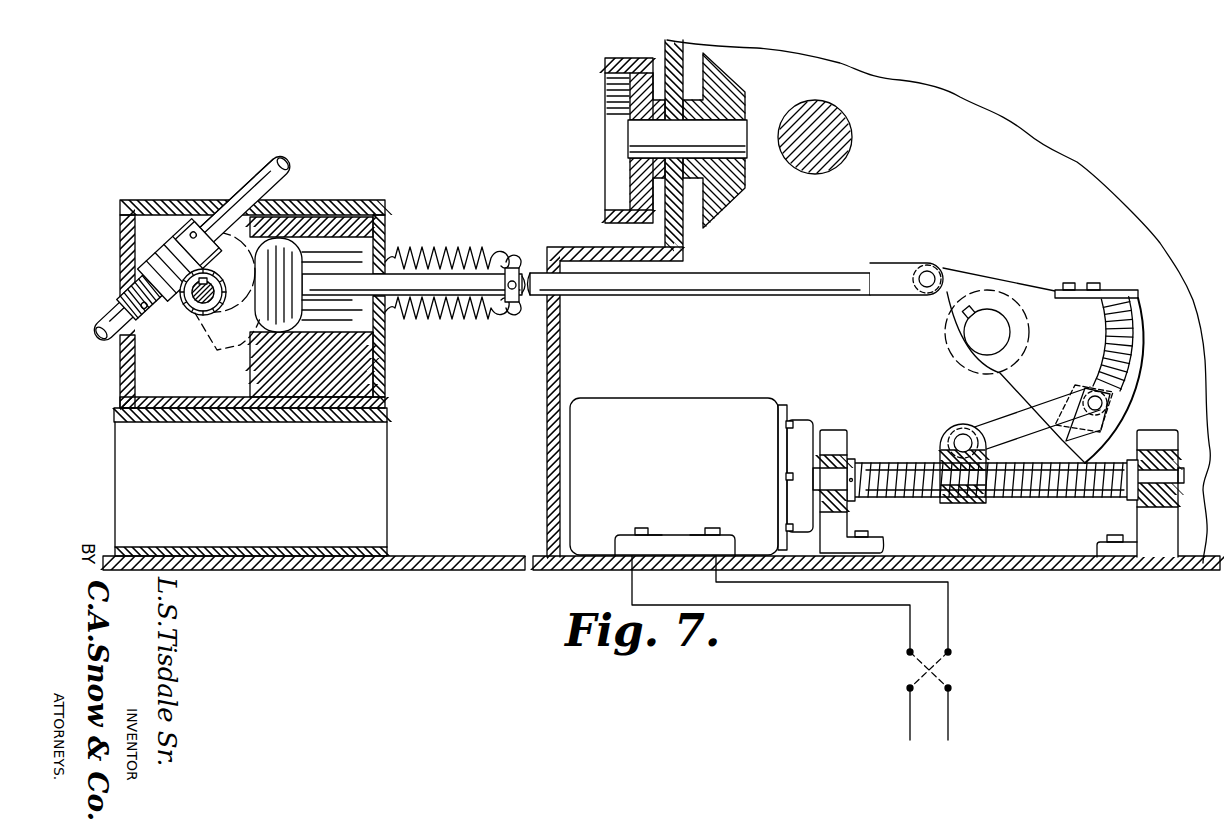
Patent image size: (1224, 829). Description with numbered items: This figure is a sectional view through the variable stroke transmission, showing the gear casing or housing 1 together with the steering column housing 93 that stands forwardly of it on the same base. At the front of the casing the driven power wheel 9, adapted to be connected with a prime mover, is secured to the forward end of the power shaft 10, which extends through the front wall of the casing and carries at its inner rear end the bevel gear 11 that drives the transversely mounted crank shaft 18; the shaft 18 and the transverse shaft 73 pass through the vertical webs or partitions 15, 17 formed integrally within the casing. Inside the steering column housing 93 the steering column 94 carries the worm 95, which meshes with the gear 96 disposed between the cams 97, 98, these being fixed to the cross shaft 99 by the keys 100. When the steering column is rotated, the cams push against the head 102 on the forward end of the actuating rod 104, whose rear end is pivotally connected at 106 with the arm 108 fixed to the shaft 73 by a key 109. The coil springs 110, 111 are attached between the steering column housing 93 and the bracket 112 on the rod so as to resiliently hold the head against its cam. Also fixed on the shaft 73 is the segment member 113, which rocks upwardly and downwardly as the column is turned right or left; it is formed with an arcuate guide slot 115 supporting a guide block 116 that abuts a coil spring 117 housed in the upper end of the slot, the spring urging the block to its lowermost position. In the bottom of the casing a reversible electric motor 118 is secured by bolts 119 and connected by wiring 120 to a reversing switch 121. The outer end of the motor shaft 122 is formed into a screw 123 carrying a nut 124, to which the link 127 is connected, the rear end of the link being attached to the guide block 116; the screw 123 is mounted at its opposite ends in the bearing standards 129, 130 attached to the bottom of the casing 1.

The gear casing or housing 1 is at (545, 373).
The driven power wheel 9 is at (607, 102).
The power shaft 10 is at (637, 140).
The bevel gear 11 is at (727, 200).
The web or partition 15 is at (1067, 158).
The web or partition 17 is at (118, 288).
The crank shaft 18 is at (848, 137).
The shaft 73 is at (987, 332).
The steering column housing 93 is at (380, 204).
The steering column 94 is at (257, 172).
The worm 95 is at (185, 246).
The gear 96 is at (187, 305).
The cam 97 is at (240, 350).
The cam 98 is at (258, 222).
The cross shaft 99 is at (198, 317).
The key 100 is at (217, 277).
The head 102 is at (300, 268).
The actuating rod 104 is at (767, 273).
The pivotal connection 106 is at (927, 272).
The arm 108 is at (962, 282).
The key 109 is at (972, 312).
The coil spring 110 is at (466, 247).
The coil spring 111 is at (463, 316).
The bracket 112 is at (520, 268).
The segment member 113 is at (1040, 297).
The arcuate guide slot 115 is at (1090, 433).
The guide block 116 is at (1117, 401).
The coil spring 117 is at (1127, 318).
The reversible electric motor 118 is at (730, 403).
The bolt 119 is at (640, 532).
The wiring 120 is at (817, 605).
The reversing switch 121 is at (930, 669).
The motor shaft 122 is at (835, 472).
The screw 123 is at (895, 465).
The nut 124 is at (970, 503).
The link 127 is at (993, 420).
The bearing standard 129 is at (835, 433).
The bearing standard 130 is at (1162, 435).